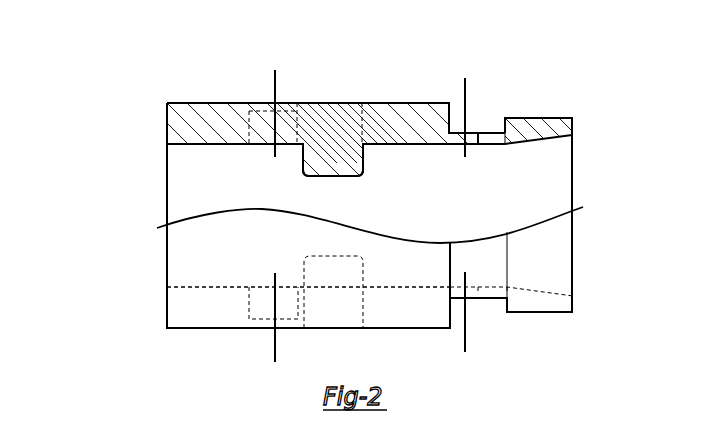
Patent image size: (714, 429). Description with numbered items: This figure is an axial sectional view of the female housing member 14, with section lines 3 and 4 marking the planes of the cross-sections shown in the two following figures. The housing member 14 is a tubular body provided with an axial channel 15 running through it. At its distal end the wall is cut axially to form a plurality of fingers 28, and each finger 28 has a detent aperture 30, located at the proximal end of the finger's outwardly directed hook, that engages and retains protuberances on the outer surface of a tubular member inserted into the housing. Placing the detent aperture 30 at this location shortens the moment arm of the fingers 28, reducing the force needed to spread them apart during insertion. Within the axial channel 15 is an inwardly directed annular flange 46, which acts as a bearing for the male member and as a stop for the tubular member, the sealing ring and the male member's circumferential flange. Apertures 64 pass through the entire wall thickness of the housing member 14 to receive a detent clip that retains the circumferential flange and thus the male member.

The section line 3- 3 is at (287, 82).
The section line 4- 4 is at (448, 89).
The housing member 14 is at (400, 122).
The axial channel 15 is at (204, 180).
The fingers 28 is at (548, 125).
The detent aperture 30 is at (492, 138).
The annular flange 46 is at (348, 160).
The apertures 64 is at (299, 100).